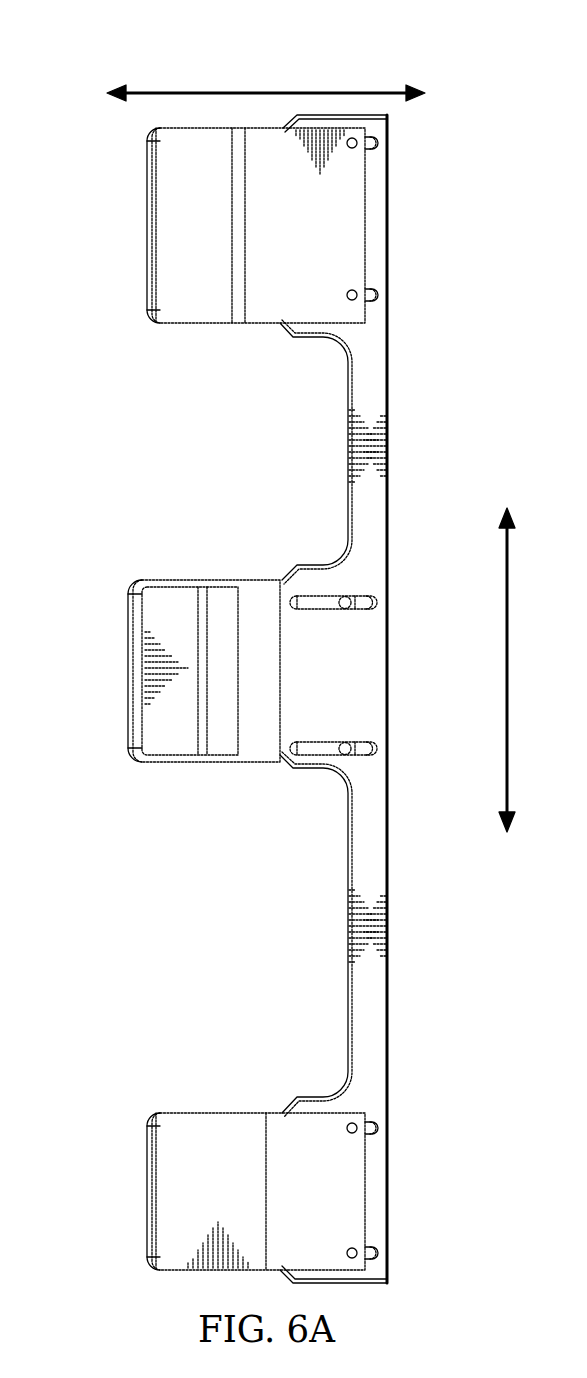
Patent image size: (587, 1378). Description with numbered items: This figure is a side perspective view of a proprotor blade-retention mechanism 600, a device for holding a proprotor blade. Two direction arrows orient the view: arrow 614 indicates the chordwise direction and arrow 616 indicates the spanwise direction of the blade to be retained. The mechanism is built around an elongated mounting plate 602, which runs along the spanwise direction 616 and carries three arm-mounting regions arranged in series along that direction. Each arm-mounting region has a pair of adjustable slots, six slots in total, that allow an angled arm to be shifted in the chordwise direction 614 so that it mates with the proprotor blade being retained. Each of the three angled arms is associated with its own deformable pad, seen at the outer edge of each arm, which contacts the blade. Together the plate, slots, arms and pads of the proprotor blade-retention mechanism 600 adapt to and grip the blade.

The proprotor blade-retention mechanism 600 is at (95, 71).
The mounting plate 602 is at (389, 512).
The chordwise direction arrow 614 is at (268, 90).
The spanwise direction arrow 616 is at (510, 672).